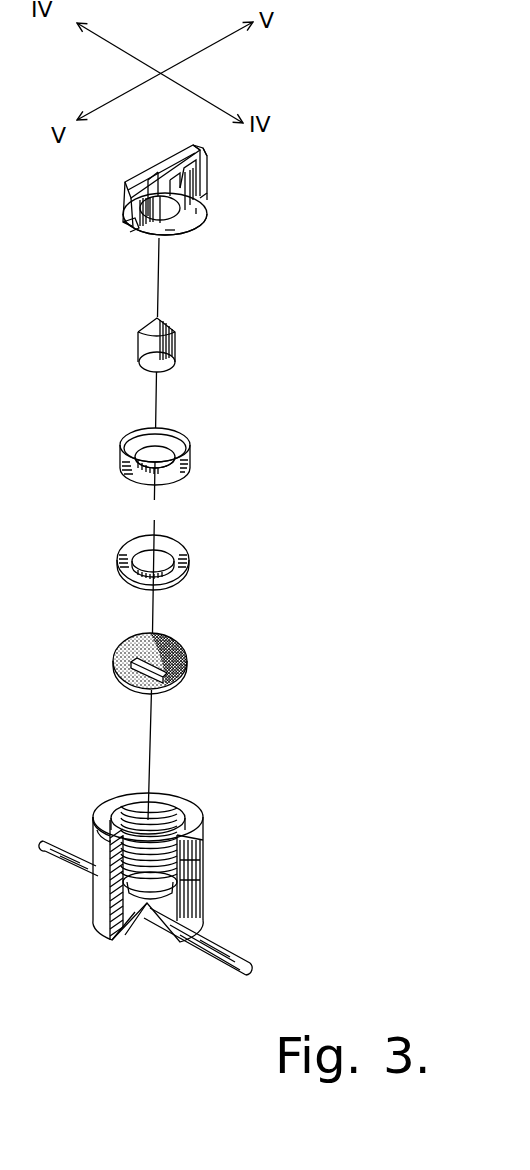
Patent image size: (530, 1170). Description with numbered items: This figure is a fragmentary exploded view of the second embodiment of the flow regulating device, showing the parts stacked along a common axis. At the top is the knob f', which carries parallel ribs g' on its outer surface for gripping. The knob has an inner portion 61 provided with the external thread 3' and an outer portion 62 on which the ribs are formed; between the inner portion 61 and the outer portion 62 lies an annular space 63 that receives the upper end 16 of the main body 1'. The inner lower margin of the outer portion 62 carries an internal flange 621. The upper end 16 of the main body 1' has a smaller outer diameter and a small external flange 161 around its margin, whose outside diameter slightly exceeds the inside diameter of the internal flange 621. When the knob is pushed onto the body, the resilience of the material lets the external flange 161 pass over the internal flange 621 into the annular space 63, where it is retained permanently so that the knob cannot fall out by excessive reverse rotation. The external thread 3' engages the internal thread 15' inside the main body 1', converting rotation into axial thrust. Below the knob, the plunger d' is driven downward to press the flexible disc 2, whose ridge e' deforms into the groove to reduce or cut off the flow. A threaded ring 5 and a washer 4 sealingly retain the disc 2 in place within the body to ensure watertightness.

The external thread 3' is at (165, 219).
The knob f' is at (216, 145).
The parallel ribs g' is at (234, 174).
The outer portion 62 is at (210, 208).
The annular space 63 is at (196, 212).
The inner portion 61 is at (171, 232).
The internal flange 621 is at (128, 223).
The plunger d' is at (181, 337).
The threaded ring 5 is at (191, 450).
The washer 4 is at (184, 552).
The flexible disc 2 is at (157, 655).
The ridge e' is at (135, 685).
The main body 1' is at (147, 861).
The internal thread 15' is at (141, 823).
The external flange 161 is at (110, 840).
The upper end 16 is at (110, 848).